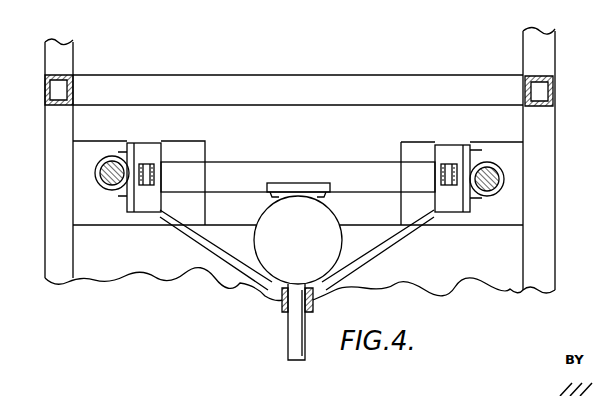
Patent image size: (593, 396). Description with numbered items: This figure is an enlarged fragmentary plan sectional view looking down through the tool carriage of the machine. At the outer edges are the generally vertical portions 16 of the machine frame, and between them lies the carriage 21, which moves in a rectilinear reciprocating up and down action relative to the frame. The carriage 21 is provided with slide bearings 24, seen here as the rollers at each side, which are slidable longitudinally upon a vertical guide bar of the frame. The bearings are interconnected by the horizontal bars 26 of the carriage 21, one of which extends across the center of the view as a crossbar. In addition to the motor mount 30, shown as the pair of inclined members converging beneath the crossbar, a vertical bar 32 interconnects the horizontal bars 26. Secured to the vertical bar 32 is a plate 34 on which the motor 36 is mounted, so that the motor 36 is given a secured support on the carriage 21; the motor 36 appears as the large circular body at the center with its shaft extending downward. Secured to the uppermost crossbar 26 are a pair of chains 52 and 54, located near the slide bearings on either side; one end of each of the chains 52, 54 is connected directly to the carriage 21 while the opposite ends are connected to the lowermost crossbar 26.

The vertical portion 16 is at (556, 93).
The carriage 21 is at (318, 140).
The slide bearings 24 is at (110, 156).
The horizontal bars 26 is at (245, 172).
The motor mount 30 is at (200, 246).
The vertical bar 32 is at (323, 183).
The plate 34 is at (328, 194).
The motor 36 is at (304, 236).
The chain 52 is at (145, 163).
The chain 54 is at (451, 164).